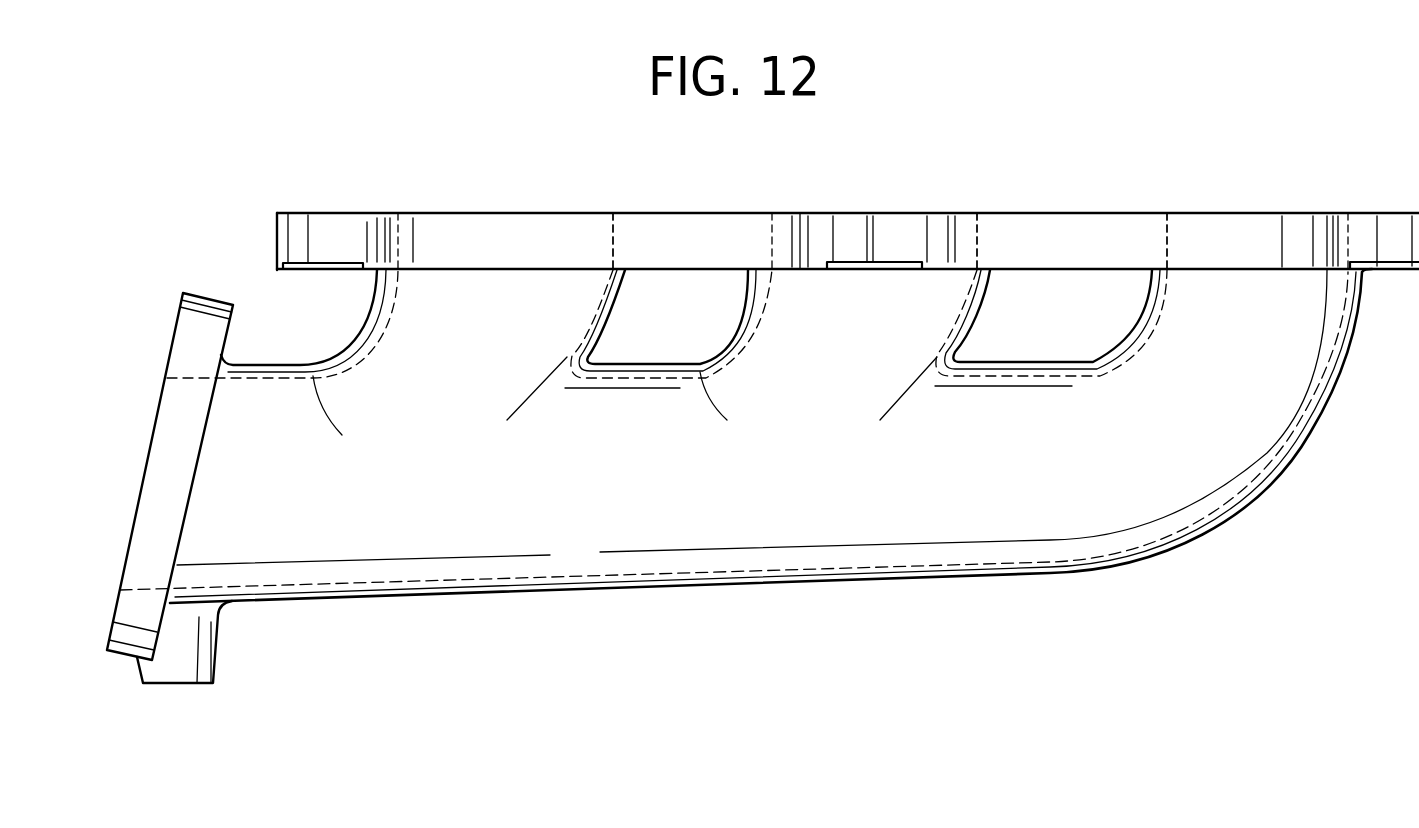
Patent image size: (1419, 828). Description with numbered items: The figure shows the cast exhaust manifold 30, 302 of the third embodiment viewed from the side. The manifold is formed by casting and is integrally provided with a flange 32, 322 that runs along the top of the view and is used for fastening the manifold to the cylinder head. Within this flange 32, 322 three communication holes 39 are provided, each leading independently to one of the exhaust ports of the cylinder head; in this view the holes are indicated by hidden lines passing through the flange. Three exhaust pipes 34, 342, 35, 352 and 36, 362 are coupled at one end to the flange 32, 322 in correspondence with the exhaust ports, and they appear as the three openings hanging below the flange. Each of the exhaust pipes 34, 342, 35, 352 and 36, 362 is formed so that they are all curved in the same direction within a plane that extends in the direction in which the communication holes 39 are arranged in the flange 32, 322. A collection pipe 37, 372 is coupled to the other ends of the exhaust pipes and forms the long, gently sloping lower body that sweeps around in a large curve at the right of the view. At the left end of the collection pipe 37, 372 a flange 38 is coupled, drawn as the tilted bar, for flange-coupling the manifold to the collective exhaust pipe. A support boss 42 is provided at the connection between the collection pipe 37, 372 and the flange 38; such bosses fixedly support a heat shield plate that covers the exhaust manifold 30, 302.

The exhaust manifold 30 is at (769, 394).
The exhaust manifold 302 is at (769, 394).
The flange 32 is at (848, 195).
The flange 322 is at (705, 228).
The exhaust pipe 34 is at (1027, 345).
The exhaust pipe 342 is at (1027, 345).
The exhaust pipe 35 is at (647, 345).
The exhaust pipe 352 is at (788, 325).
The exhaust pipe 36 is at (282, 352).
The exhaust pipe 362 is at (393, 335).
The collection pipe 37 is at (746, 468).
The collection pipe 372 is at (633, 553).
The flange 38 is at (198, 332).
The communication holes 39 is at (613, 233).
The support boss 42 is at (207, 655).